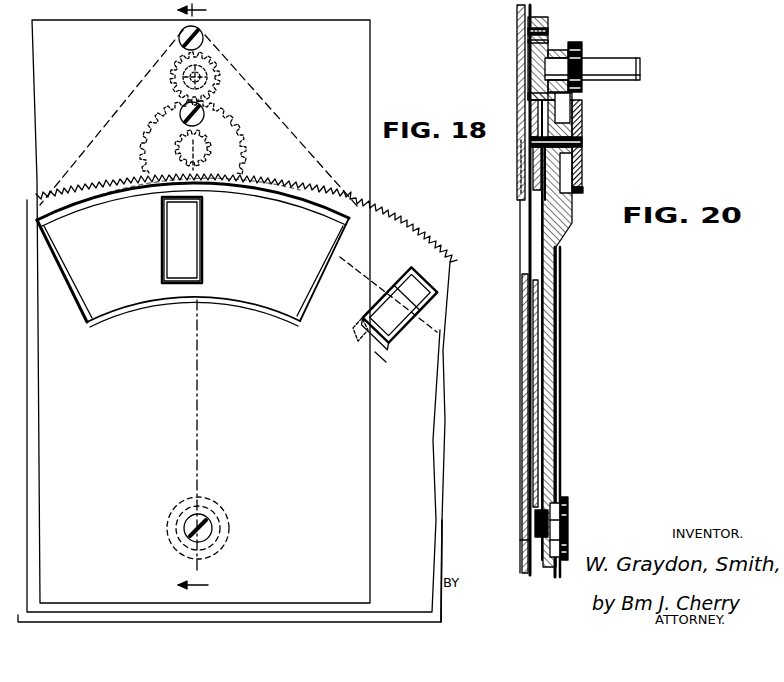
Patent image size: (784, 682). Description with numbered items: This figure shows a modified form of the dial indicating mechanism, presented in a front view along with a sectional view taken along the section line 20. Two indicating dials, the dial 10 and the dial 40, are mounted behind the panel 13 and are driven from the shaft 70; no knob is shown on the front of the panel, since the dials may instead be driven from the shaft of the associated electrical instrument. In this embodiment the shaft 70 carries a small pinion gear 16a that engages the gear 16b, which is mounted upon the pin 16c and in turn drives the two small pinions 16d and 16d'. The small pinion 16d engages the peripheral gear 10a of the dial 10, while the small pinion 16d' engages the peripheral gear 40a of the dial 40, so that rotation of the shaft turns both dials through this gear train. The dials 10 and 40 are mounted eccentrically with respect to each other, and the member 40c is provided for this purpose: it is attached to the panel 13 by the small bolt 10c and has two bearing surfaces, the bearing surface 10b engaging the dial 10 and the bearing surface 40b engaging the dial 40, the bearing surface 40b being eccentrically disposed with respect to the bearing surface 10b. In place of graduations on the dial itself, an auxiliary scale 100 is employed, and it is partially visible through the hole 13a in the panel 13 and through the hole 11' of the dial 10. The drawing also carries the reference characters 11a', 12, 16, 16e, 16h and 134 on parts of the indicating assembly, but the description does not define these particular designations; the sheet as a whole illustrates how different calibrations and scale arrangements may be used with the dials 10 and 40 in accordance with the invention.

In FIG. 18, the dial 10 is at (433, 455).
In FIG. 20, the dial 10 is at (548, 347).
In FIG. 18, the peripheral gear 10a is at (246, 253).
In FIG. 20, the peripheral gear 10a is at (522, 163).
In FIG. 20, the bearing surface 10b is at (528, 543).
In FIG. 18, the small bolt 10c is at (187, 518).
In FIG. 20, the small bolt 10c is at (533, 517).
In FIG. 18, the hole 11' is at (151, 242).
In FIG. 20, the hole 11' is at (507, 330).
In FIG. 18, the pointer 11a' is at (399, 370).
In FIG. 18, the pointer scale box 12 is at (396, 327).
In FIG. 20, the panel 13 is at (523, 377).
In FIG. 18, the hole 13a is at (132, 312).
In FIG. 20, the hole 13a is at (518, 200).
In FIG. 20, the bearing hub 16 is at (518, 32).
In FIG. 18, the small pinion gear 16a is at (168, 73).
In FIG. 20, the small pinion gear 16a is at (577, 43).
In FIG. 18, the gear 16b is at (243, 127).
In FIG. 20, the gear 16b is at (583, 210).
In FIG. 20, the pin 16c is at (583, 142).
In FIG. 18, the small pinion 16d is at (152, 150).
In FIG. 20, the small pinion 16d is at (511, 134).
In FIG. 20, the small pinion 16d' is at (592, 86).
In FIG. 20, the bearing body 16e is at (518, 62).
In FIG. 18, the pivot screw 16h is at (203, 38).
In FIG. 20, the pivot screw 16h is at (515, 107).
In FIG. 18, the section line 20 is at (207, 300).
In FIG. 18, the dial 40 is at (459, 529).
In FIG. 20, the dial 40 is at (558, 392).
In FIG. 20, the peripheral gear 40a is at (580, 173).
In FIG. 18, the bearing surface 40b is at (221, 530).
In FIG. 20, the bearing surface 40b is at (570, 497).
In FIG. 18, the member 40c is at (225, 552).
In FIG. 20, the member 40c is at (568, 525).
In FIG. 18, the shaft 70 is at (170, 80).
In FIG. 20, the shaft 70 is at (627, 60).
In FIG. 18, the auxiliary scale 100 is at (243, 180).
In FIG. 20, the auxiliary scale 100 is at (537, 210).
In FIG. 18, the dial window 134 is at (153, 241).